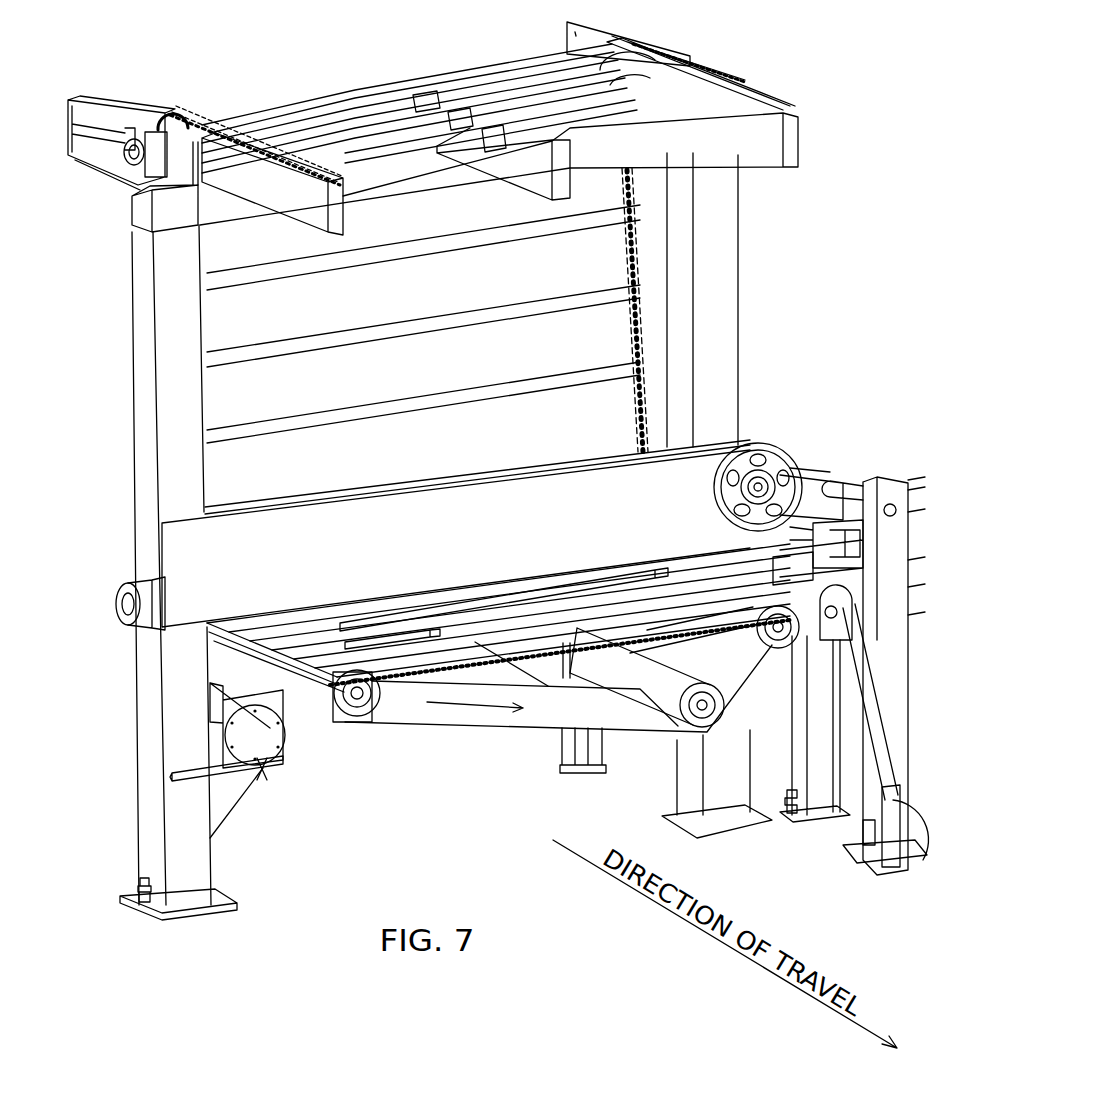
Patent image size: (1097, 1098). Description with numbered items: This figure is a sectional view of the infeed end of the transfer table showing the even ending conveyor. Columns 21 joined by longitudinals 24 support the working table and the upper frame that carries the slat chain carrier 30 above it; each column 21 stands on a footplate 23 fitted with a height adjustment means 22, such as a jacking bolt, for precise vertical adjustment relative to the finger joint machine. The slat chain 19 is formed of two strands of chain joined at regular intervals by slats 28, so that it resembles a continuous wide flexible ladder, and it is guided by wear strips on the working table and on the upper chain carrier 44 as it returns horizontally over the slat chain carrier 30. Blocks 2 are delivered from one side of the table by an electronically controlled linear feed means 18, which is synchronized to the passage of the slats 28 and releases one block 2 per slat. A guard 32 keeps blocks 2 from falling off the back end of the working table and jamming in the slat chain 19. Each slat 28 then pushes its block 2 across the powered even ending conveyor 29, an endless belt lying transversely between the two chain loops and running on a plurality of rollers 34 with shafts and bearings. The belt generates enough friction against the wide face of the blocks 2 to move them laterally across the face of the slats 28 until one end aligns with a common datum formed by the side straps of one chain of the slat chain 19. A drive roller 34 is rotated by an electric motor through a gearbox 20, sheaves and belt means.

The block 2 is at (514, 573).
The linear feed means 18 is at (840, 477).
The slat chain 19 is at (610, 267).
The gearbox 20 is at (271, 774).
The column 21 is at (126, 703).
The height adjustment means 22 is at (129, 864).
The footplate 23 is at (150, 924).
The longitudinal 24 is at (333, 730).
The slat 28 is at (514, 372).
The even ending conveyor 29 is at (515, 732).
The slat chain carrier 30 is at (814, 150).
The guard 32 is at (280, 546).
The roller 34 is at (360, 707).
The upper chain carrier 44 is at (802, 107).